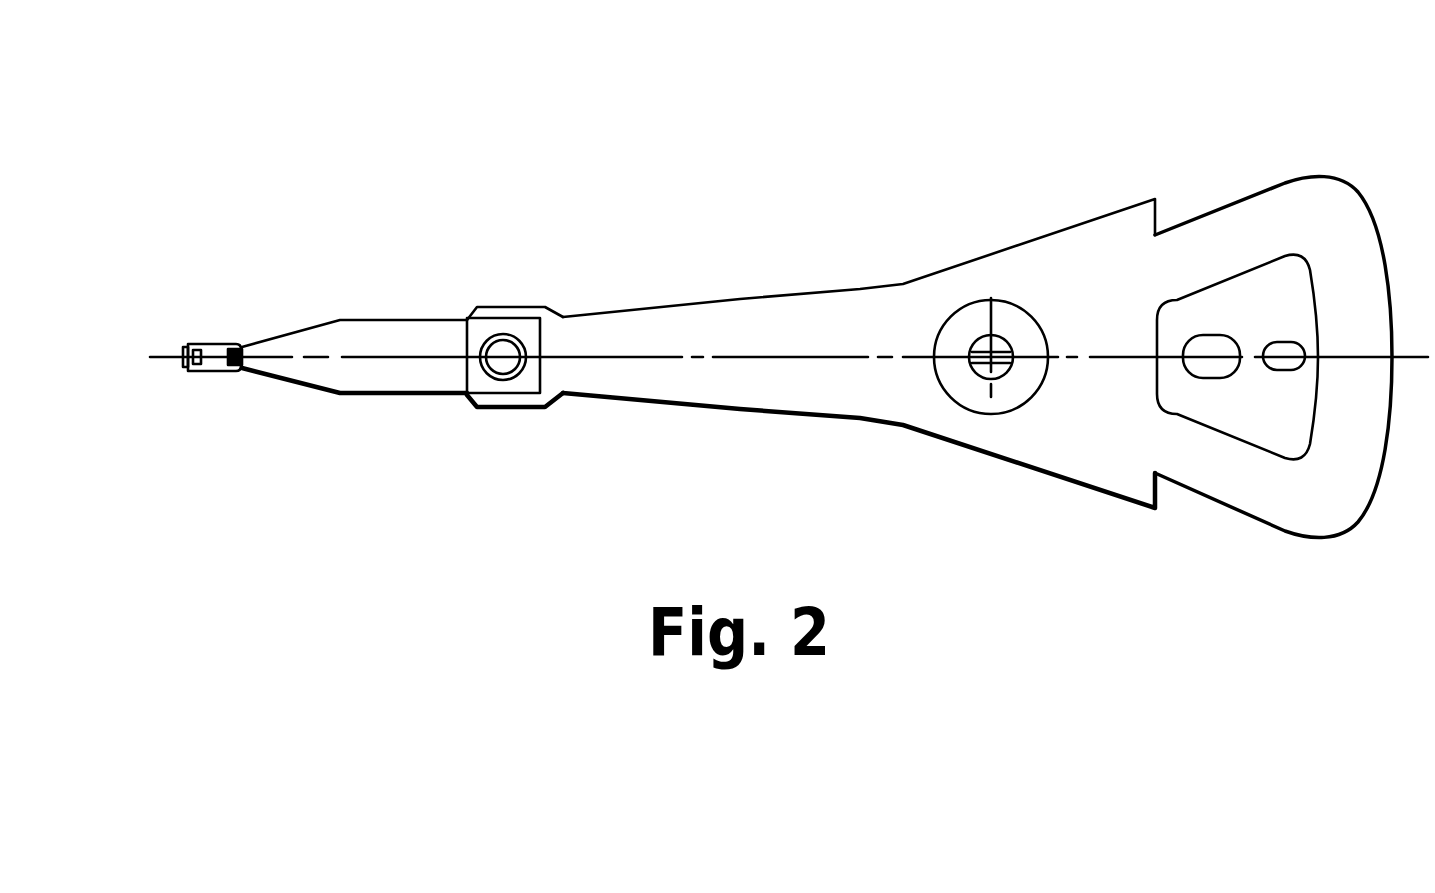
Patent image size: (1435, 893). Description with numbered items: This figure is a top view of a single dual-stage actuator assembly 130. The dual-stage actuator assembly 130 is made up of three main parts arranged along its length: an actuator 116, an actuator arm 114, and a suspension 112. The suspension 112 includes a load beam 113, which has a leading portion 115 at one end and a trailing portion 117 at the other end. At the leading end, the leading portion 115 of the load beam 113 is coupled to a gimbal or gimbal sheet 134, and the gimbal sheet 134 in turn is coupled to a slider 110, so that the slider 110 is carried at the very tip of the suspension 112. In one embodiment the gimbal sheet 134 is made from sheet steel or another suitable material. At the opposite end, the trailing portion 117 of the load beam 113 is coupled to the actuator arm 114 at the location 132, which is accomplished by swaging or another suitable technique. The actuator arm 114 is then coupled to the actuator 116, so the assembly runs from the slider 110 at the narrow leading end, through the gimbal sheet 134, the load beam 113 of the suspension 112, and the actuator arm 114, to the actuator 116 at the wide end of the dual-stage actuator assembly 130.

The slider 110 is at (173, 363).
The suspension 112 is at (343, 318).
The load beam 113 is at (393, 363).
The actuator arm 114 is at (750, 298).
The leading portion 115 is at (216, 367).
The actuator 116 is at (1352, 188).
The trailing portion 117 is at (528, 373).
The dual-stage actuator assembly 130 is at (950, 136).
The coupling location 132 is at (500, 317).
The gimbal sheet 134 is at (200, 343).